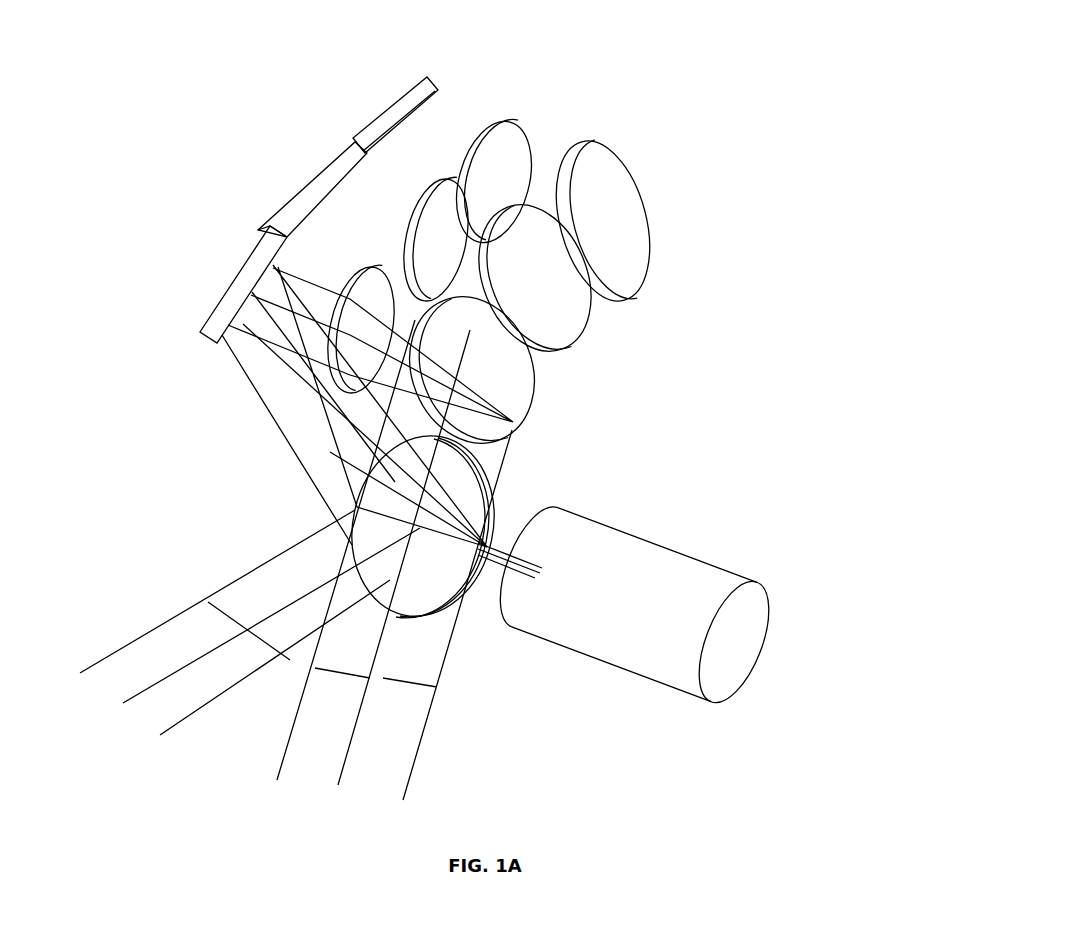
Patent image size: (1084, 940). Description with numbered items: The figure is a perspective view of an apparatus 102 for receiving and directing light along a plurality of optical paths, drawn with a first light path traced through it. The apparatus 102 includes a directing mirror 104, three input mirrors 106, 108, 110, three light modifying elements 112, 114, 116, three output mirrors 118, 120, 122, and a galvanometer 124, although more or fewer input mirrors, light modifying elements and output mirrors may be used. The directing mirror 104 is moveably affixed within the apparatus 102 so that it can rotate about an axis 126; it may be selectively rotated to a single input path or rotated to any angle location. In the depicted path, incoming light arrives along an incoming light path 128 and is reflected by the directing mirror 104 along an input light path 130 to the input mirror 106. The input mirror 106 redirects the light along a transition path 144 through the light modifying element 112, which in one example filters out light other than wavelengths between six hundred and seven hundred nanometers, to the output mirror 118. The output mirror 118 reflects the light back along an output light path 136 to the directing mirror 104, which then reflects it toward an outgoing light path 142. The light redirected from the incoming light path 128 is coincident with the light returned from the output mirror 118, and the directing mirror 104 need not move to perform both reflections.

The apparatus 102 is at (812, 164).
The directing mirror 104 is at (353, 506).
The input mirror 106 is at (532, 415).
The input mirror 108 is at (587, 336).
The input mirror 110 is at (650, 272).
The light modifying element 112 is at (369, 268).
The light modifying element 114 is at (437, 180).
The light modifying element 116 is at (522, 124).
The output mirror 118 is at (220, 289).
The output mirror 120 is at (296, 184).
The output mirror 122 is at (360, 117).
The galvanometer 124 is at (702, 559).
The axis 126 is at (308, 477).
The incoming light path 128 is at (223, 641).
The input light path 130 is at (442, 456).
The output light path 136 is at (296, 372).
The outgoing light path 142 is at (387, 708).
The transition path 144 is at (291, 310).